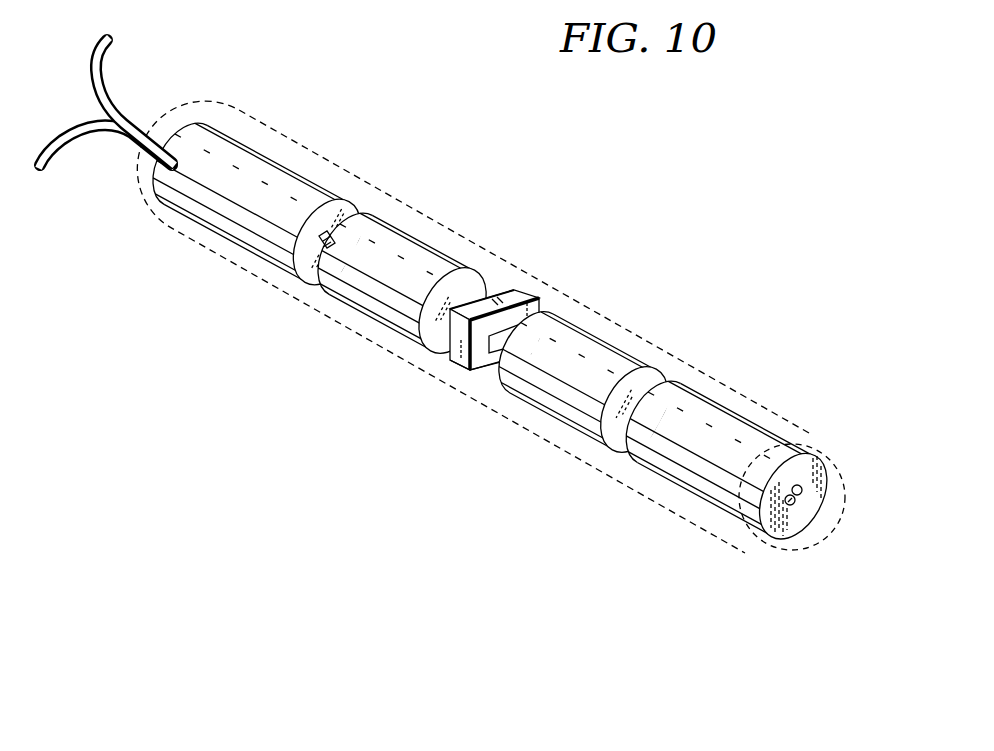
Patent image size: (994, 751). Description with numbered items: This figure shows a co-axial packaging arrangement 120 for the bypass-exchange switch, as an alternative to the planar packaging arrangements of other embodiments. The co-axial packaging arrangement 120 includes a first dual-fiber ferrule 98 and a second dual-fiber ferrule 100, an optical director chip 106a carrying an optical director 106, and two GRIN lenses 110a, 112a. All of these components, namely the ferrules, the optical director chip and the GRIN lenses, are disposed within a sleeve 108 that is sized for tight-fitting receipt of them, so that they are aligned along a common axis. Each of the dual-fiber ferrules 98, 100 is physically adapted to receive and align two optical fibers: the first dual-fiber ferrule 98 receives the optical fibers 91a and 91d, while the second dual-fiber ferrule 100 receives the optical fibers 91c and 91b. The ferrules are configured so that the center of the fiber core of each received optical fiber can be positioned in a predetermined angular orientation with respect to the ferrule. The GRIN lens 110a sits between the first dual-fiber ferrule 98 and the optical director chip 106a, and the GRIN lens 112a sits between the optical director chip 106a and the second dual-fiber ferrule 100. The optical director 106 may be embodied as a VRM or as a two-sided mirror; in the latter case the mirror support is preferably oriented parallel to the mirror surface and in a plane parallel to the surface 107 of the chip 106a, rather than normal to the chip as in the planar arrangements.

The optical fiber 91a is at (112, 48).
The optical fiber 91b is at (788, 505).
The optical fiber 91c is at (798, 488).
The optical fiber 91d is at (42, 170).
The first dual-fiber ferrule 98 is at (225, 215).
The second dual-fiber ferrule 100 is at (680, 467).
The optical director 106 is at (503, 330).
The optical director chip 106a is at (480, 363).
The surface of the chip 107 is at (533, 310).
The sleeve 108 is at (258, 128).
The GRIN lens 110a is at (370, 298).
The GRIN lens 112a is at (590, 352).
The co-axial packaging arrangement 120 is at (425, 153).